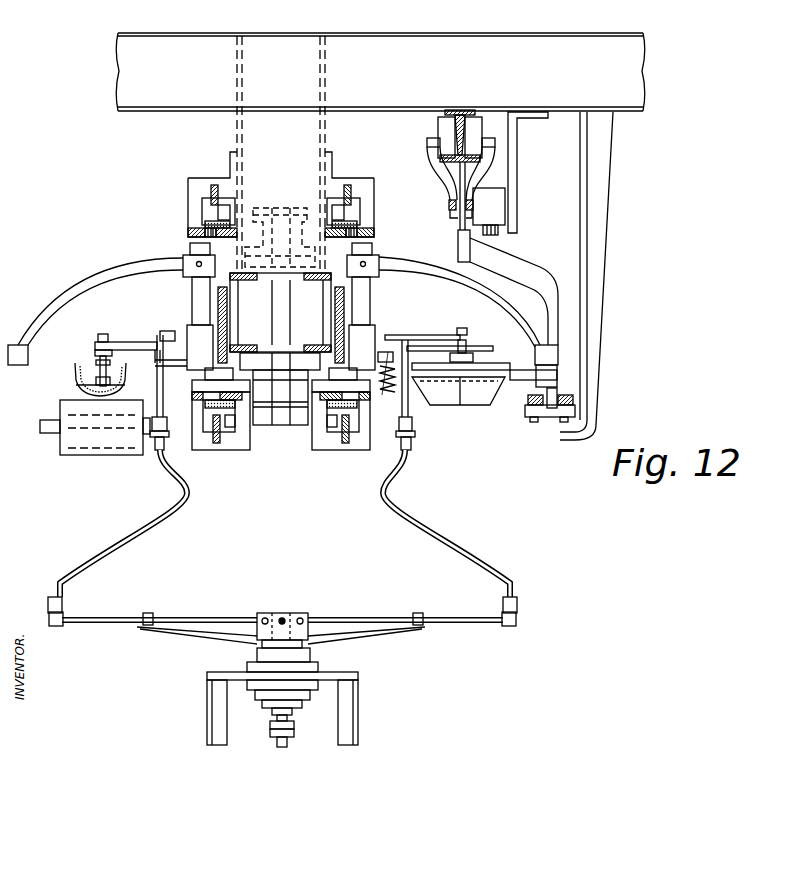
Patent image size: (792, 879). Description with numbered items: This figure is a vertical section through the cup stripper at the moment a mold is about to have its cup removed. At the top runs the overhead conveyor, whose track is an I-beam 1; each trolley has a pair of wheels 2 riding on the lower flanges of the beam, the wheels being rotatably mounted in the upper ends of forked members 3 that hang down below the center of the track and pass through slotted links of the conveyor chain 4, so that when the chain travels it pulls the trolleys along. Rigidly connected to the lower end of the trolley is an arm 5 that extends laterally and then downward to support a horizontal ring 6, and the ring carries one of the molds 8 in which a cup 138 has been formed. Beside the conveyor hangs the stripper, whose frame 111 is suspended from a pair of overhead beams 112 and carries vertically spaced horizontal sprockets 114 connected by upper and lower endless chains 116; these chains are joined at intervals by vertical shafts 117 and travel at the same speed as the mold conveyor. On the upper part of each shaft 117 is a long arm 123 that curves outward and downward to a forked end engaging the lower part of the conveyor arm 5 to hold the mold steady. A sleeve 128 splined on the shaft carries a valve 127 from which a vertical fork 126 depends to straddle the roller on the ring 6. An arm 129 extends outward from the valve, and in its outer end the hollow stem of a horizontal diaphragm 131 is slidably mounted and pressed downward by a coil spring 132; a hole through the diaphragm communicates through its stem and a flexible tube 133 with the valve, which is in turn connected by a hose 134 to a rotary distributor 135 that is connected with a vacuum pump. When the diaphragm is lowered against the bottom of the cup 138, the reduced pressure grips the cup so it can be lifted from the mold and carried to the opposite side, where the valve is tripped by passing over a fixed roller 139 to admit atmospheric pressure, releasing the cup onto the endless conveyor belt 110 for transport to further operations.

The I-beam 1 is at (483, 134).
The wheels 2 is at (438, 128).
The forked members 3 is at (430, 162).
The conveyor chain 4 is at (449, 205).
The arm 5 is at (525, 271).
The horizontal ring 6 is at (455, 393).
The molds 8 is at (478, 396).
The endless conveyor belt 110 is at (92, 445).
The frame 111 is at (242, 283).
The overhead beams 112 is at (542, 47).
The sprockets 114 is at (295, 215).
The endless chains 116 is at (203, 218).
The vertical shafts 117 is at (196, 295).
The long arm 123 is at (100, 282).
The vertical fork 126 is at (408, 405).
The valve 127 is at (160, 341).
The sleeve 128 is at (372, 336).
The arm 129 is at (122, 330).
The horizontal diaphragm 131 is at (85, 393).
The coil spring 132 is at (470, 363).
The flexible tube 133 is at (435, 337).
The hose 134 is at (148, 533).
The rotary distributor 135 is at (300, 614).
The cup 138 is at (78, 382).
The fixed roller 139 is at (166, 420).